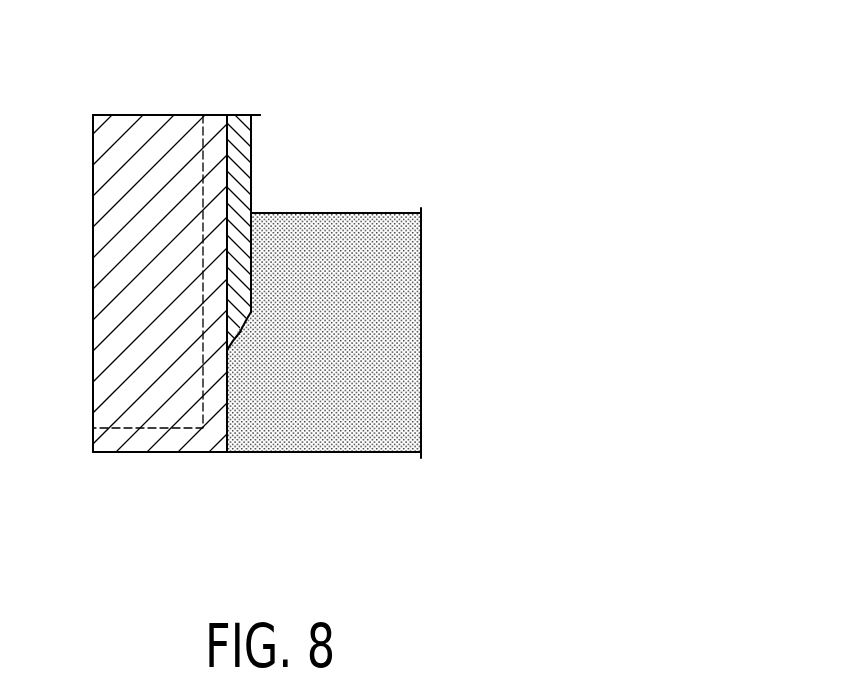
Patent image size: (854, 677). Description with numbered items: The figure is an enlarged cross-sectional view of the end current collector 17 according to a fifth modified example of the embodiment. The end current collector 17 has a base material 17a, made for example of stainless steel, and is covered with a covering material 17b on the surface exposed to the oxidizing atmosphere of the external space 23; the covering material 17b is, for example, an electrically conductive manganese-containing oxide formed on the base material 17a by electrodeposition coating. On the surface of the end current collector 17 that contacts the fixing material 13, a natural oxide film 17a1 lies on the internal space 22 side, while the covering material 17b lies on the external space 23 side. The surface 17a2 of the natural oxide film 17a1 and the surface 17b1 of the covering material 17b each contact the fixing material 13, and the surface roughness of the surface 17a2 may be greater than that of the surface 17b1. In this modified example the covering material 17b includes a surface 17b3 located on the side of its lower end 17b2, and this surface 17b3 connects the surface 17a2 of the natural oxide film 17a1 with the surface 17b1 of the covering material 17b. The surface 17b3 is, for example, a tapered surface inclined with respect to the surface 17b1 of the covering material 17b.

The fixing material 13 is at (393, 325).
The end current collector 17 is at (269, 284).
The base material 17a is at (257, 284).
The natural oxide film 17a1 is at (162, 453).
The surface of the natural oxide film 17a2 is at (228, 405).
The covering material 17b is at (363, 272).
The surface of the covering material 17b1 is at (252, 272).
The end of the covering material 17b2 is at (228, 348).
The tapered surface 17b3 is at (243, 330).
The internal space 22 is at (267, 497).
The external space 23 is at (395, 138).